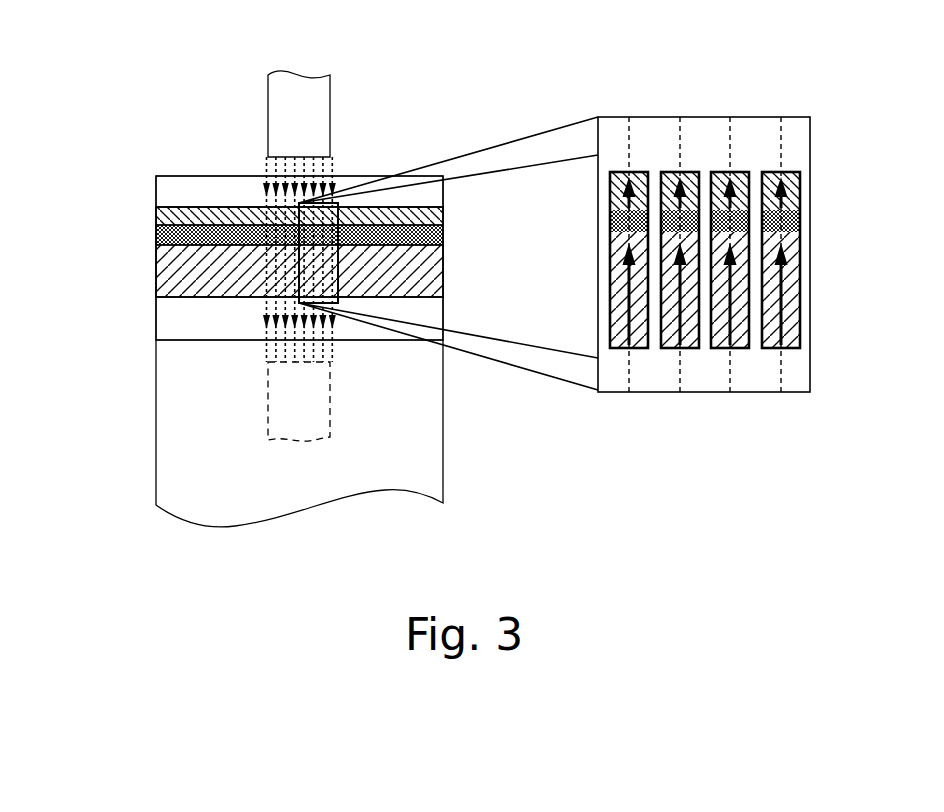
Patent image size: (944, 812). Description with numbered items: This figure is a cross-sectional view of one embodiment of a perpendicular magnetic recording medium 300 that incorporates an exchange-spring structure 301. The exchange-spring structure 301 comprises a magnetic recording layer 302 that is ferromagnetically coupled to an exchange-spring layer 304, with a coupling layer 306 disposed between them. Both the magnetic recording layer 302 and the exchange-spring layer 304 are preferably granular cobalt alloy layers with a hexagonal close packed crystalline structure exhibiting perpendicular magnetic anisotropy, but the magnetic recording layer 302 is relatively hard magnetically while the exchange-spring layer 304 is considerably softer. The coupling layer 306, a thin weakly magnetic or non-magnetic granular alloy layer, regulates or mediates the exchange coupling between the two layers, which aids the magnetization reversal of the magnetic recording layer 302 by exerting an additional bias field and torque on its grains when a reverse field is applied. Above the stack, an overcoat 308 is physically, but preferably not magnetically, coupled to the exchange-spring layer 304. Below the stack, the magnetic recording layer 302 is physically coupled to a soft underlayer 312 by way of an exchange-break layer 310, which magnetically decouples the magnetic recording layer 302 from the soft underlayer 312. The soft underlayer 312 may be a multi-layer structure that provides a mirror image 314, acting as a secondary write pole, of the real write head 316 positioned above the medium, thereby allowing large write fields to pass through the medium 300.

The perpendicular magnetic recording medium 300 is at (122, 72).
The exchange-spring structure 301 is at (453, 207).
The magnetic recording layer 302 is at (159, 270).
The exchange-spring layer 304 is at (158, 214).
The coupling layer 306 is at (158, 240).
The overcoat 308 is at (160, 190).
The exchange-break layer 310 is at (160, 318).
The soft underlayer 312 is at (160, 402).
The mirror image 314 is at (280, 398).
The real write head 316 is at (283, 117).